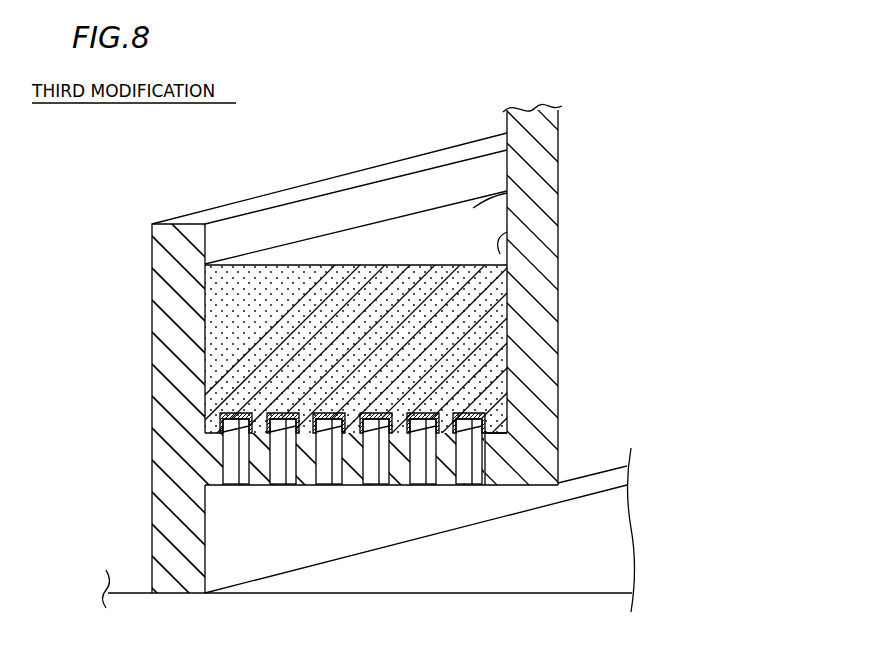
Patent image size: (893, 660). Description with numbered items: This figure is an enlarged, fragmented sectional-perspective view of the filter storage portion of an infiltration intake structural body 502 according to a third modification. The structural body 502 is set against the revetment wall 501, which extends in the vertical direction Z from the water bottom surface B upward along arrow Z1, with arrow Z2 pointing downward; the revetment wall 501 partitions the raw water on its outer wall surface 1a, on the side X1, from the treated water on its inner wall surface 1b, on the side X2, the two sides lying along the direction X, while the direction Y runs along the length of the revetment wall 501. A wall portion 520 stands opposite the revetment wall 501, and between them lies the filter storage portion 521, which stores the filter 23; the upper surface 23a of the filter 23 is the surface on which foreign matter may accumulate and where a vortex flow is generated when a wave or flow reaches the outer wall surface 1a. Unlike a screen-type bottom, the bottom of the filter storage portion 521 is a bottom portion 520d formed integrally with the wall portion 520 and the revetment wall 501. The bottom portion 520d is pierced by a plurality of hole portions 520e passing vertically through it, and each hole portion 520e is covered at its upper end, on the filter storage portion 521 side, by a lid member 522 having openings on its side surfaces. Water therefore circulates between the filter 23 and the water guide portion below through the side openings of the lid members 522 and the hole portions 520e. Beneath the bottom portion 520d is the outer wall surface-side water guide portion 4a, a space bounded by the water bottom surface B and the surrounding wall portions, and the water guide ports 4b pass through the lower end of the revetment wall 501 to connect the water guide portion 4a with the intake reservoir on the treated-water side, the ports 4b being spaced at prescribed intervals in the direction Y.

The infiltration intake structural body 502 is at (125, 200).
The wall portion 520 is at (190, 238).
The filter storage portion 521 is at (263, 245).
The revetment wall 501 is at (536, 123).
The inner wall surface 1b is at (561, 124).
The outer wall surface 1a is at (507, 232).
The filter 23 is at (225, 328).
The surface of the filter 23a is at (507, 193).
The lid members 522 is at (220, 418).
The bottom portion 520d is at (216, 455).
The hole portions 520e is at (233, 483).
The outer wall surface-side water guide portion 4a is at (401, 574).
The water guide ports 4b is at (507, 486).
The water bottom surface B is at (128, 593).
The arrow Z1 is at (725, 344).
The arrow Z2 is at (725, 385).
The direction Z is at (742, 344).
The direction Y is at (770, 468).
The side X1 is at (722, 553).
The side X2 is at (762, 553).
The direction X is at (762, 570).